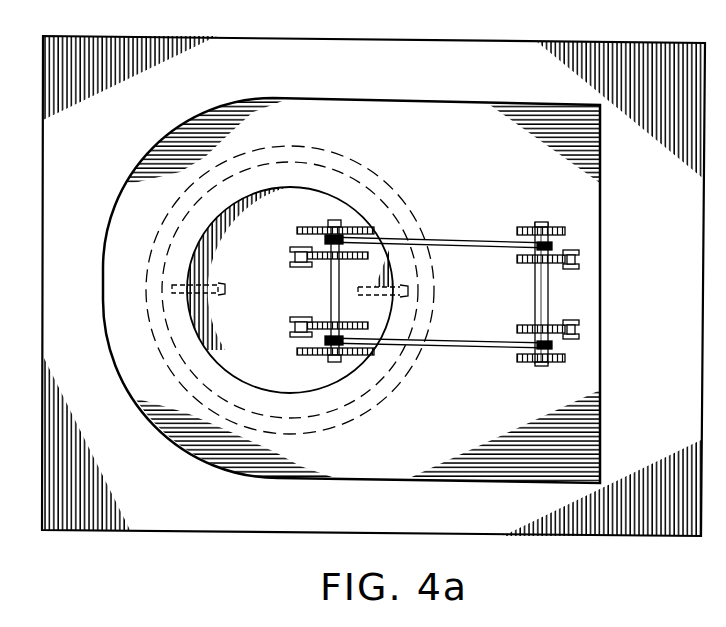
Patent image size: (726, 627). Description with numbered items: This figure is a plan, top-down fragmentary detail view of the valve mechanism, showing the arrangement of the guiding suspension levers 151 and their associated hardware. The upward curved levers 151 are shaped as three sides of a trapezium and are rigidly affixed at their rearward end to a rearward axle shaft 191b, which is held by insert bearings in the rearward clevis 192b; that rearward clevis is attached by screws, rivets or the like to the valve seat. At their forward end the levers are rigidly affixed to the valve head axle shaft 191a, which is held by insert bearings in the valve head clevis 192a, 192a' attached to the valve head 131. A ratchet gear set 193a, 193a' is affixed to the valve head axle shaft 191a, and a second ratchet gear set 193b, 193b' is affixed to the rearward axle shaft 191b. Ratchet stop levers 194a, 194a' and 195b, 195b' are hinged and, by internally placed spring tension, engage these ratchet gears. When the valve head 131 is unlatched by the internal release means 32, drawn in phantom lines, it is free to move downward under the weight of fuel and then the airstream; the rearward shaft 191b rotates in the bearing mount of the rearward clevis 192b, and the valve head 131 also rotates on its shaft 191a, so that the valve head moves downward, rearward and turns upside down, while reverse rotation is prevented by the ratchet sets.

The valve head 131 is at (320, 193).
The internal release means 32 is at (224, 286).
The guiding suspension levers 151 is at (440, 349).
The valve head axle shaft 191a is at (331, 288).
The rearward axle shaft 191b is at (535, 364).
The valve head clevis 192a is at (305, 358).
The valve head clevis 192a' is at (366, 188).
The rearward clevis 192b is at (522, 227).
The ratchet gear 193a is at (358, 315).
The ratchet gear 193a' is at (407, 222).
The ratchet gear 193b is at (517, 314).
The ratchet gear 193b' is at (594, 234).
The ratchet stop lever 194a is at (294, 324).
The ratchet stop lever 194a' is at (296, 251).
The ratchet stop lever 195b is at (615, 329).
The ratchet stop lever 195b' is at (617, 265).